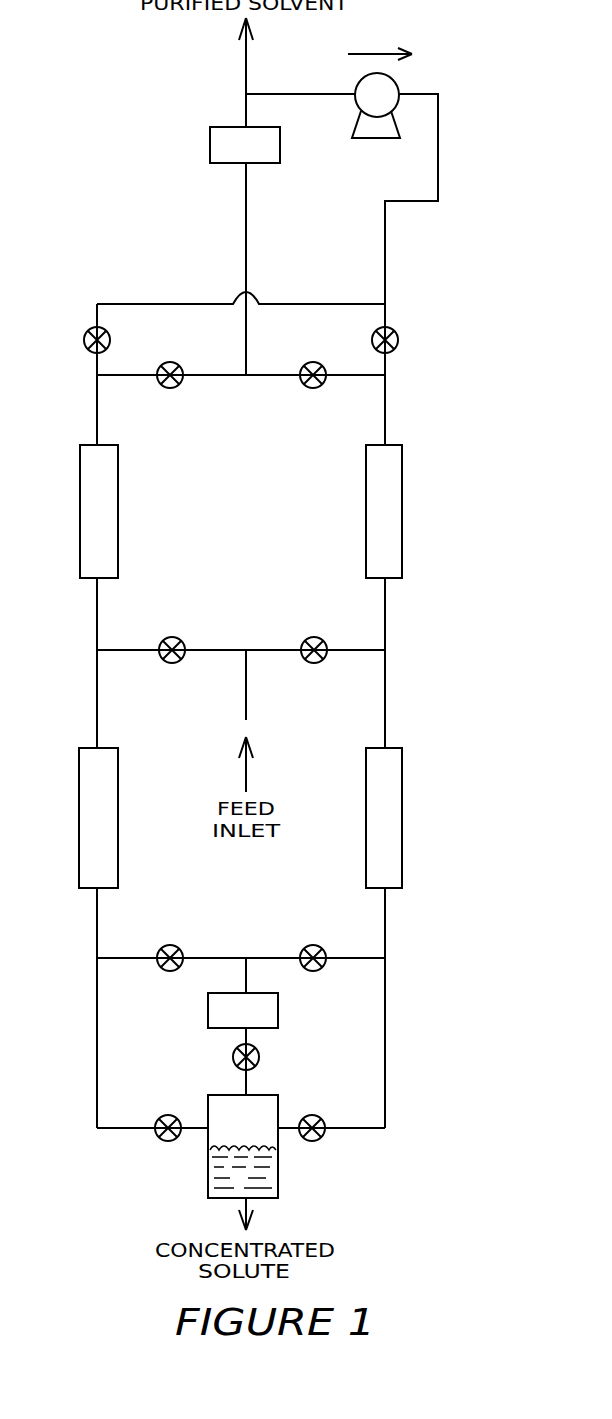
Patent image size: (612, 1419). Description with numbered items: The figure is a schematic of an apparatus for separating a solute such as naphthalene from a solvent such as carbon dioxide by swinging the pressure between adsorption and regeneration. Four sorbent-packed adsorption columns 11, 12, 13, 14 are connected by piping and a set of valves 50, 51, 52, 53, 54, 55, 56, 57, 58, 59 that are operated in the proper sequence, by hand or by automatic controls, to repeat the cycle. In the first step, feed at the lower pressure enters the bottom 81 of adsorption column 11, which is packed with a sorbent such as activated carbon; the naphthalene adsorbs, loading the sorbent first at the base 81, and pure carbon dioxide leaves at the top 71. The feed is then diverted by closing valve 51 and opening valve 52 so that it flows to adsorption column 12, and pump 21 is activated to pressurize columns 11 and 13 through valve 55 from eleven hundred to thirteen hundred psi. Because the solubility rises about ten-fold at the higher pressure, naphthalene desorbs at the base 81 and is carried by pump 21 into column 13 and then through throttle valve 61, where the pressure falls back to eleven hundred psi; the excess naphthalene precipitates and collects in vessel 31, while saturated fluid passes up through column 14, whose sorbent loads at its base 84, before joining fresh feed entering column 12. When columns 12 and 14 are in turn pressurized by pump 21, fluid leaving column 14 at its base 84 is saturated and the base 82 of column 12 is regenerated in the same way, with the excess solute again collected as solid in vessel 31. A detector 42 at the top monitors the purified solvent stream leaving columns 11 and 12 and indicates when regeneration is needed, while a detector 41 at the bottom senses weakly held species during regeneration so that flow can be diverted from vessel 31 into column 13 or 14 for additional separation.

The adsorption column 11 is at (106, 525).
The adsorption column 12 is at (394, 522).
The adsorption column 13 is at (106, 806).
The adsorption column 14 is at (394, 806).
The pump 21 is at (362, 139).
The vessel 31 is at (270, 1170).
The detector 41 is at (268, 1008).
The detector 42 is at (210, 157).
The valve 50 is at (318, 1115).
The valve 51 is at (175, 637).
The valve 52 is at (318, 637).
The valve 53 is at (178, 389).
The valve 54 is at (316, 389).
The valve 55 is at (84, 341).
The valve 56 is at (399, 343).
The valve 57 is at (176, 945).
The valve 58 is at (314, 945).
The valve 59 is at (170, 1115).
The throttle valve 61 is at (260, 1056).
The top of adsorption column 71 is at (88, 453).
The bottom of adsorption column 81 is at (88, 575).
The base of adsorption column 82 is at (393, 572).
The base of adsorption column 84 is at (393, 877).